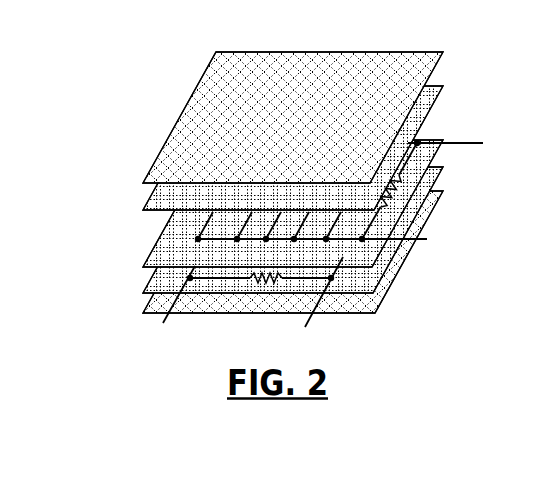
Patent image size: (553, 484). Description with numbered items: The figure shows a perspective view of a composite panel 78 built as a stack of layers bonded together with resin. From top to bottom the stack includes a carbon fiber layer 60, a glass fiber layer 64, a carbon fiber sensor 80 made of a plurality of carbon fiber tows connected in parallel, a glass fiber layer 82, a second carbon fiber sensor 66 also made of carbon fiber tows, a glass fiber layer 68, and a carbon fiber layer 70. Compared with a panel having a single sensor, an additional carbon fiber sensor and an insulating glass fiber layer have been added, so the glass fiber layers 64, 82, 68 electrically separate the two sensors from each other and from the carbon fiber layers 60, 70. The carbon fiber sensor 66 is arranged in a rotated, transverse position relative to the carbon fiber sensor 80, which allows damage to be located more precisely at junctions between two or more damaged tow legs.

The composite panel 78 is at (106, 109).
The carbon fiber layer 60 is at (443, 53).
The glass fiber layer 64 is at (443, 87).
The glass fiber layer 68 is at (443, 168).
The carbon fiber layer 70 is at (443, 193).
The carbon fiber sensor 66 is at (375, 288).
The carbon fiber sensor 80 is at (427, 237).
The glass fiber layer 82 is at (443, 137).